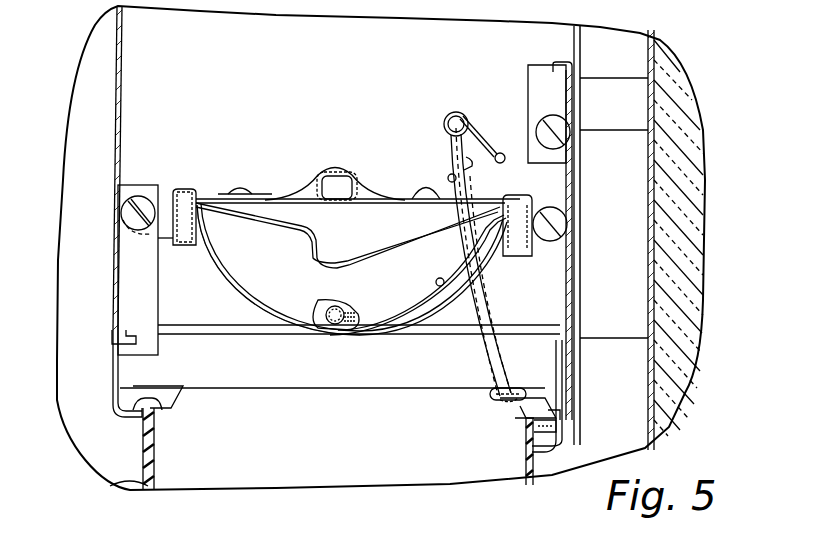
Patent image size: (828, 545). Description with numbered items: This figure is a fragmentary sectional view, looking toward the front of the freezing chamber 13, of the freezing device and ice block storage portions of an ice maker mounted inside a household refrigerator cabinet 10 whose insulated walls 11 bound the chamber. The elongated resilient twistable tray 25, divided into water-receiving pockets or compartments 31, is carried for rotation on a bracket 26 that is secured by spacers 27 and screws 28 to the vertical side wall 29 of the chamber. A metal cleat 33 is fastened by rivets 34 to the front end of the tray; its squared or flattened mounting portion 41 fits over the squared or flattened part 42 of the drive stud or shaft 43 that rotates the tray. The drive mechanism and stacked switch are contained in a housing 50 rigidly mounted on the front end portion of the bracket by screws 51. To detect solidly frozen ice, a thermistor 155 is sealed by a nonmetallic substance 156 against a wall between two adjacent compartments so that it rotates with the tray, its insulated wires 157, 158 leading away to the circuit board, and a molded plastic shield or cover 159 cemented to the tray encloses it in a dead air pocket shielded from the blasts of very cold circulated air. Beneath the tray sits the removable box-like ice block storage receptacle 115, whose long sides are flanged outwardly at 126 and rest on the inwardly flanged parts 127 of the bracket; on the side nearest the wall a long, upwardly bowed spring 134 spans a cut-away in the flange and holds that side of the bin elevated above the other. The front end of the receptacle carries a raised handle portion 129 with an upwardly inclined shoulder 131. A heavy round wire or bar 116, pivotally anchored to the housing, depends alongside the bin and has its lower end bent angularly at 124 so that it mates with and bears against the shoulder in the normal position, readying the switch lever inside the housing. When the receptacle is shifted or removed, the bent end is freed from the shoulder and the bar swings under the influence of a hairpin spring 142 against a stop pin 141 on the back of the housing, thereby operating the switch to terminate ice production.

The household refrigerator cabinet 10 is at (690, 374).
The insulated walls 11 is at (694, 228).
The freezing or frozen food storage chamber 13 is at (90, 325).
The freezing device, mold or tray 25 is at (174, 185).
The bracket 26 is at (118, 388).
The spacers 27 is at (598, 102).
The screws 28 is at (564, 95).
The vertical side wall 29 is at (648, 260).
The pockets or compartments 31 is at (325, 240).
The metal cleats 33 is at (296, 198).
The rivets 34 is at (238, 190).
The squared or flattened mounting portion 41 is at (344, 172).
The squared or flattened part 42 is at (334, 173).
The drive stud or shaft 43 is at (344, 190).
The housing 50 is at (137, 77).
The screws 51 is at (127, 213).
The ice block storage receptacle 115 is at (154, 466).
The wire or bar 116 is at (494, 308).
The angularly bent lower end part 124 is at (494, 380).
The outward flanges 126 is at (162, 408).
The inwardly flanged parts 127 is at (136, 420).
The handle portion 129 is at (146, 486).
The upwardly inclined shoulder 131 is at (170, 387).
The bowed spring 134 is at (558, 431).
The stop pin 141 is at (451, 178).
The hairpin spring 142 is at (483, 130).
The thermistor 155 is at (340, 307).
The nonmetallic substance 156 is at (320, 316).
The insulated wire 157 is at (456, 265).
The insulated wire 158 is at (443, 290).
The shield or cover 159 is at (216, 268).